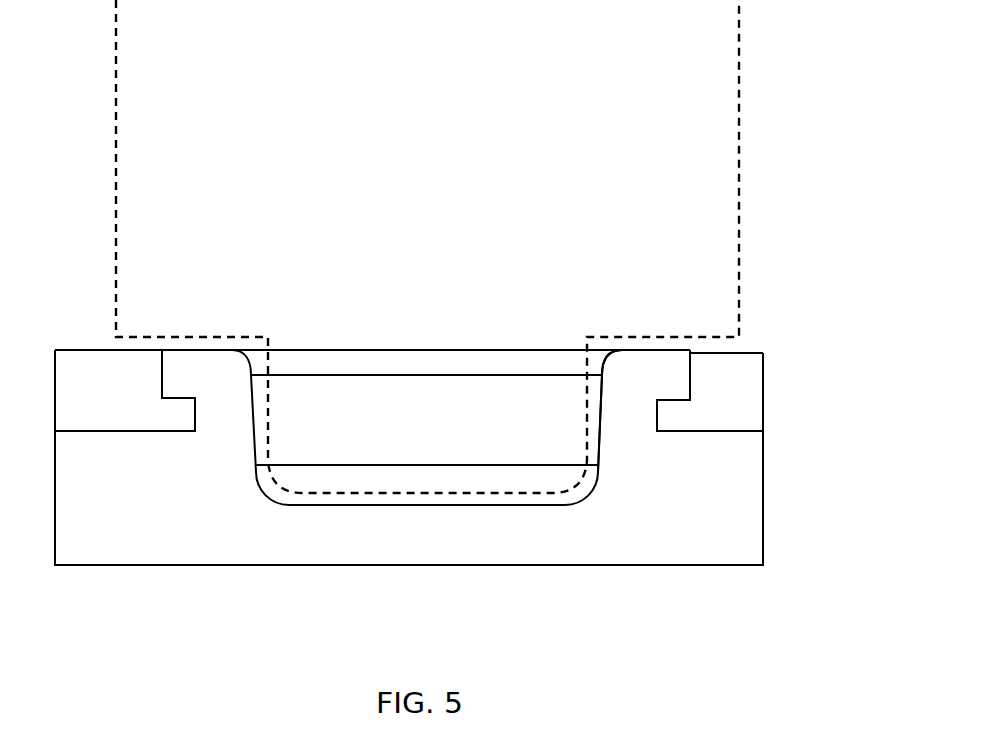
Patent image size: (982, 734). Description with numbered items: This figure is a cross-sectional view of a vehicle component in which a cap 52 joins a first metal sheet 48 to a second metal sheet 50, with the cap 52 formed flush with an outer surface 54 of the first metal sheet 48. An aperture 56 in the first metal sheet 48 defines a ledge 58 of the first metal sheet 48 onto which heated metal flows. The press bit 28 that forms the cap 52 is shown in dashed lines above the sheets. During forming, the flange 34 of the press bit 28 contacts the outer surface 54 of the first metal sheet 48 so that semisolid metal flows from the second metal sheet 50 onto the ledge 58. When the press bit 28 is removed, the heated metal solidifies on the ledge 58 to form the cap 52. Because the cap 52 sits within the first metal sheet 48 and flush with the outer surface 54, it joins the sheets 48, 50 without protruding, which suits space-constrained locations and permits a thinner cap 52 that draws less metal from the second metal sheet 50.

The press bit 28 is at (739, 80).
The flange 34 is at (604, 338).
The first metal sheet 48 is at (751, 358).
The second metal sheet 50 is at (747, 546).
The cap 52 is at (208, 353).
The outer surface 54 is at (92, 350).
The aperture 56 is at (531, 347).
The ledge 58 is at (182, 410).